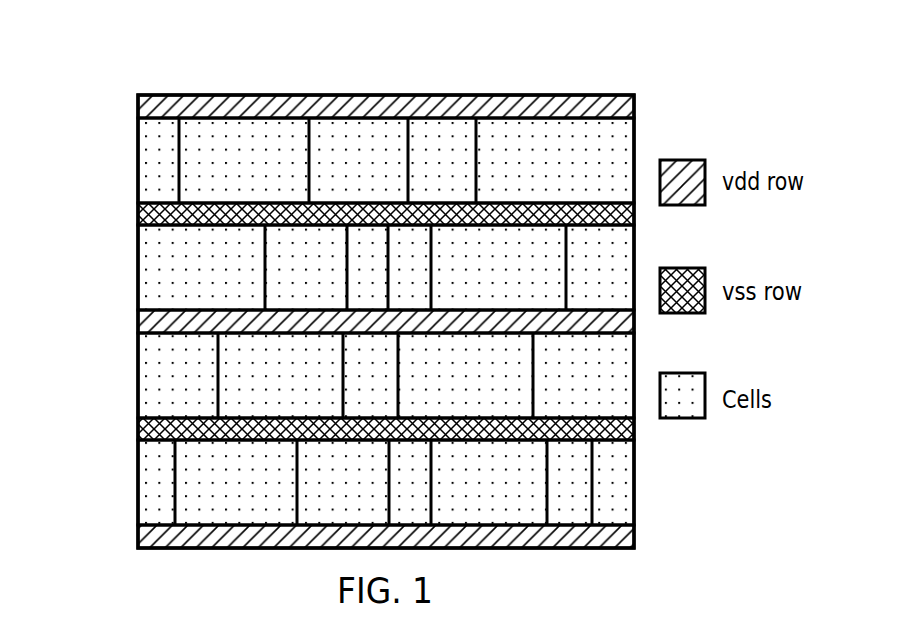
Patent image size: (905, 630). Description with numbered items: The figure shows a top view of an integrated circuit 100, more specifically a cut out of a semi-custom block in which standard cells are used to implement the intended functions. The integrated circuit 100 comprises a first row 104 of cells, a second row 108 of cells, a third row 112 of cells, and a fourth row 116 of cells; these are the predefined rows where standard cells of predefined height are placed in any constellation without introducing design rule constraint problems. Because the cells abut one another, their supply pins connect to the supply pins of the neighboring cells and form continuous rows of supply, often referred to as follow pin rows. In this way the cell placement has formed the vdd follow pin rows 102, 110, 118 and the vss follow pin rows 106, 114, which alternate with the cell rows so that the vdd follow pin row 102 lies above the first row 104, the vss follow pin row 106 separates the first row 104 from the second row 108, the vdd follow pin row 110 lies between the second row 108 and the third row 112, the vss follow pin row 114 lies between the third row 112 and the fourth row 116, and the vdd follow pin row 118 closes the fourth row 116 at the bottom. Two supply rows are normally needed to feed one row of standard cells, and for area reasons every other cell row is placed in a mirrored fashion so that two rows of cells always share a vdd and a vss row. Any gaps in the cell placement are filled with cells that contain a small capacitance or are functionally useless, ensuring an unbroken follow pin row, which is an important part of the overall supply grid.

The integrated circuit 100 is at (205, 59).
The vdd follow pin row 102 is at (137, 110).
The first row of cells 104 is at (137, 162).
The vss follow pin row 106 is at (137, 214).
The second row of cells 108 is at (137, 278).
The vdd follow pin row 110 is at (137, 327).
The third row of cells 112 is at (137, 378).
The vss follow pin row 114 is at (137, 429).
The fourth row of cells 116 is at (137, 481).
The vdd follow pin row 118 is at (137, 538).